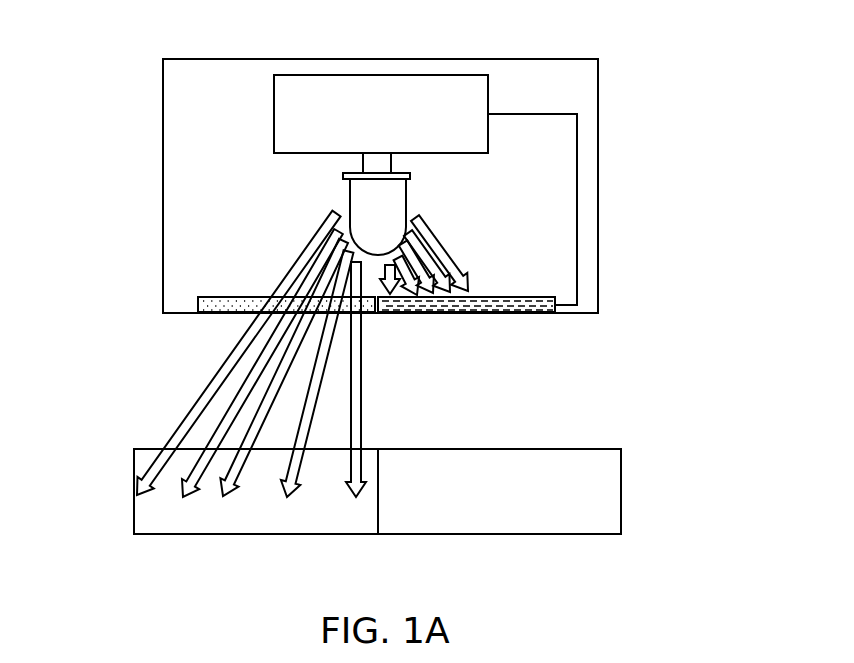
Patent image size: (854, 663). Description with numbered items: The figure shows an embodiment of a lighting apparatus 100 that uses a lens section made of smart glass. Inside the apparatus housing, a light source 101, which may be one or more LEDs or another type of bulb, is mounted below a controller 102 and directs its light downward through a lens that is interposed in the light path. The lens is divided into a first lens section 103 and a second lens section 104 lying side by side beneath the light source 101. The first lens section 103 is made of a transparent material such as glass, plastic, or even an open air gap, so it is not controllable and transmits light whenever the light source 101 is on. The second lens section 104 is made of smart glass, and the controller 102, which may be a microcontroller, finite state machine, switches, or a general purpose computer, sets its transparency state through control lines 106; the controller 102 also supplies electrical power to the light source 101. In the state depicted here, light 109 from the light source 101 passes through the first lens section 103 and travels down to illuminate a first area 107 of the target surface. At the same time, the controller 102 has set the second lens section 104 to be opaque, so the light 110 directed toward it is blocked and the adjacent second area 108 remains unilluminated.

The lighting apparatus 100 is at (627, 74).
The light source 101 is at (348, 200).
The controller 102 is at (417, 75).
The first lens section 103 is at (220, 313).
The second lens section 104 is at (538, 313).
The control lines 106 is at (577, 187).
The first area 107 is at (165, 514).
The second area 108 is at (603, 513).
The light 109 is at (190, 396).
The light 110 is at (458, 249).